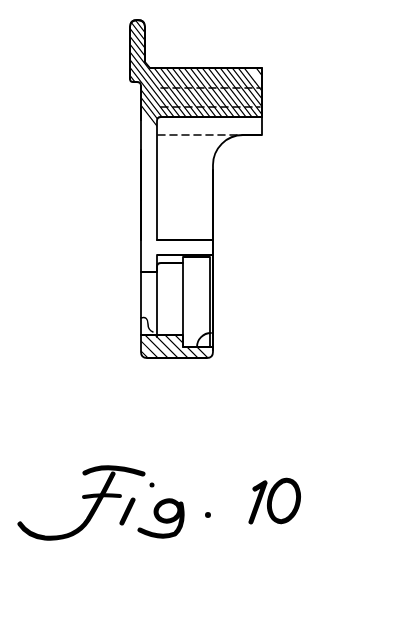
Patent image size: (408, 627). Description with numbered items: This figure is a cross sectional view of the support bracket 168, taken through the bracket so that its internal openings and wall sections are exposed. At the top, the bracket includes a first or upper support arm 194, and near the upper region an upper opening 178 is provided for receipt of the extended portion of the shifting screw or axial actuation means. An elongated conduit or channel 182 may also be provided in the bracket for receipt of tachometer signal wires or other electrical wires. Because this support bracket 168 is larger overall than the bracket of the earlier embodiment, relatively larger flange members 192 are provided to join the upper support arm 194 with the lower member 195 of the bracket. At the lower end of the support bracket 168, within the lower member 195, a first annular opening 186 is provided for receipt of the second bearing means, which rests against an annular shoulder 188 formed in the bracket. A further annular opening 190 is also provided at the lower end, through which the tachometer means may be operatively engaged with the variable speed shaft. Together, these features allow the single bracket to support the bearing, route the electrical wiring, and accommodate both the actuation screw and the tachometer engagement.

The support bracket 168 is at (122, 171).
The upper opening 178 is at (128, 42).
The elongated conduit or channel 182 is at (139, 97).
The first annular opening 186 is at (212, 328).
The annular shoulder 188 is at (212, 262).
The further annular opening 190 is at (141, 318).
The flange members 192 is at (215, 170).
The first or upper support arm 194 is at (213, 70).
The lower member 195 is at (141, 214).